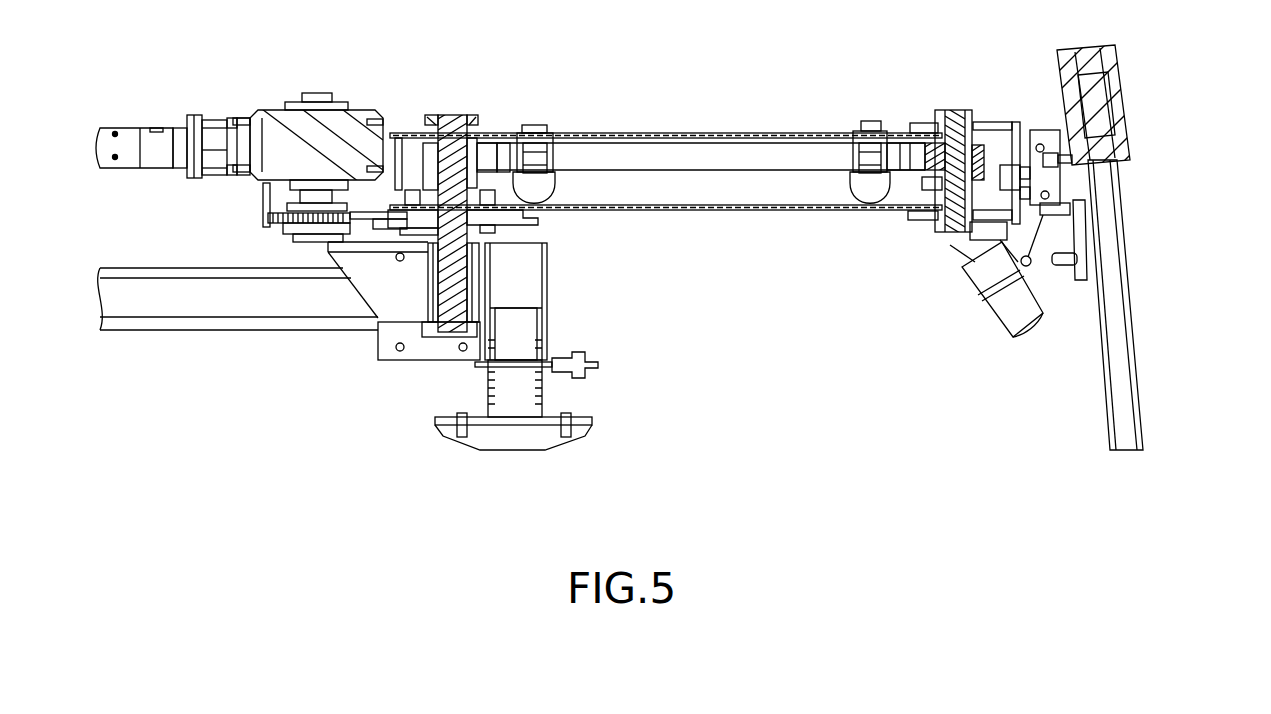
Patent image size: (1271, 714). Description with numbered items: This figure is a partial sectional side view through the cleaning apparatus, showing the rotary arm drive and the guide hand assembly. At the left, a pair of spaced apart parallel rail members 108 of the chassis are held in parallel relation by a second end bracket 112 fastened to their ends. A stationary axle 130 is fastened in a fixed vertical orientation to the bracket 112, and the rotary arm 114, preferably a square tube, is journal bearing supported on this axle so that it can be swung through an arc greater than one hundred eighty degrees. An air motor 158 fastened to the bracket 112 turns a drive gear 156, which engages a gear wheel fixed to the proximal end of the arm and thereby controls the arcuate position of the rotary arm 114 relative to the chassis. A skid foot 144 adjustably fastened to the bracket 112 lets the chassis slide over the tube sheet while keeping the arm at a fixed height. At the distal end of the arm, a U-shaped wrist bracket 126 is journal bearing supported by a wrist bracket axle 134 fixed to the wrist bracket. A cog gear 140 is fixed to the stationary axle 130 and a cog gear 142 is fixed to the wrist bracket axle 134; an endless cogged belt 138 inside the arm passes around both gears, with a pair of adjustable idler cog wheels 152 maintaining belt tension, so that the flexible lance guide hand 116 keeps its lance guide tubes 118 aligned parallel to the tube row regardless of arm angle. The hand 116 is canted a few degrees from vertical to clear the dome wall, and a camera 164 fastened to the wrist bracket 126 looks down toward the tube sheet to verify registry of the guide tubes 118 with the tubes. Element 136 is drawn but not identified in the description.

The rail members 108 is at (262, 332).
The second end bracket 112 is at (545, 293).
The rotary arm 114 is at (697, 133).
The flexible lance guide hand 116 is at (1136, 112).
The lance guide tubes 118 is at (1143, 350).
The wrist bracket 126 is at (1015, 122).
The stationary axle 130 is at (453, 115).
The wrist bracket axle 134 is at (955, 110).
The clamp block 136 is at (920, 123).
The endless cogged belt 138 is at (725, 173).
The cog gear 140 is at (487, 165).
The cog gear 142 is at (979, 146).
The skid foot 144 is at (592, 432).
The adjustable idler cog wheels 152 is at (540, 125).
The drive gear 156 is at (270, 222).
The air motor 158 is at (175, 128).
The camera 164 is at (992, 318).